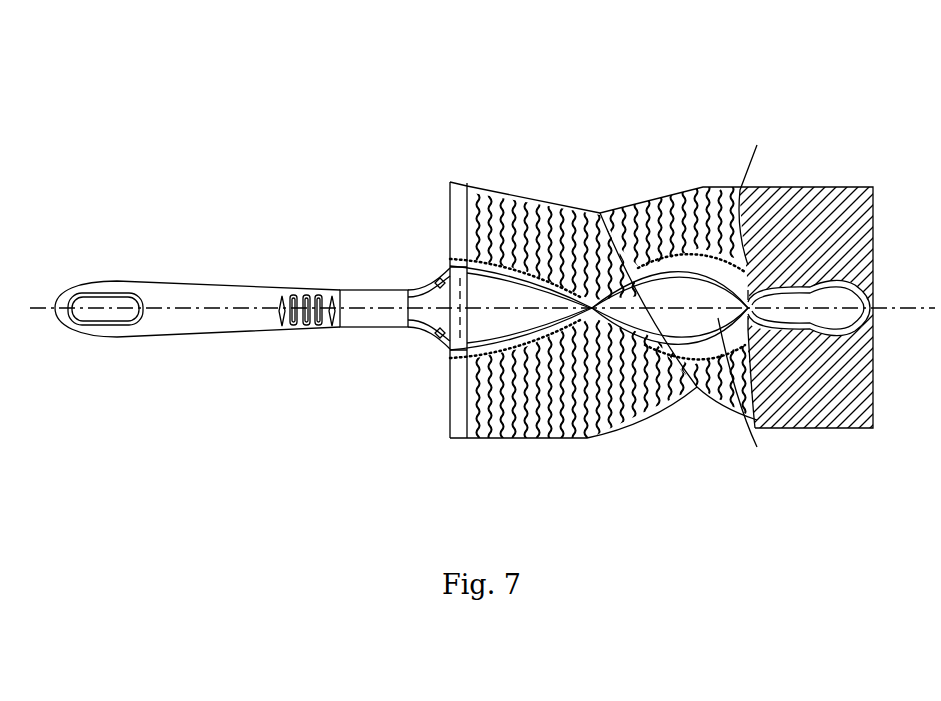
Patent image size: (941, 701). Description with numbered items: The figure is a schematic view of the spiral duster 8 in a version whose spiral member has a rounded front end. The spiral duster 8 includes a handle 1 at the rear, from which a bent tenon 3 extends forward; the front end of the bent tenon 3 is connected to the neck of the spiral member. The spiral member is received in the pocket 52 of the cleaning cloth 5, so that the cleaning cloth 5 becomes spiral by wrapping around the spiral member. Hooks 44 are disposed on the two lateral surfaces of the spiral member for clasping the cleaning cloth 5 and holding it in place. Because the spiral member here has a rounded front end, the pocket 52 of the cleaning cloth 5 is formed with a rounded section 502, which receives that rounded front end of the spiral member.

The handle 1 is at (90, 287).
The bent tenon 3 is at (360, 288).
The spiral duster 8 is at (465, 113).
The hooks 44 is at (493, 267).
The pocket 52 is at (520, 293).
The cleaning cloth 5 is at (678, 190).
The rounded section 502 is at (870, 270).